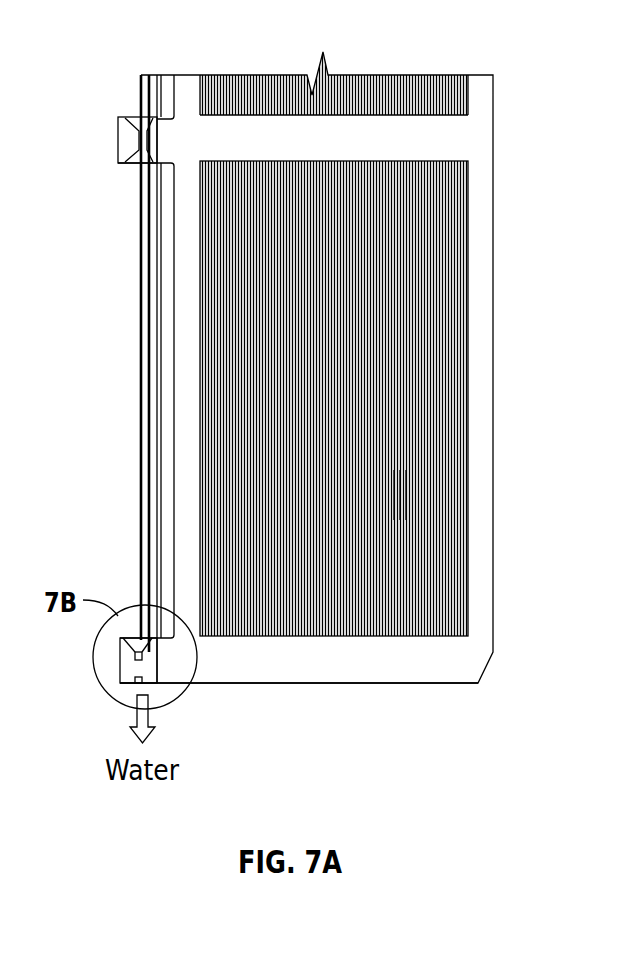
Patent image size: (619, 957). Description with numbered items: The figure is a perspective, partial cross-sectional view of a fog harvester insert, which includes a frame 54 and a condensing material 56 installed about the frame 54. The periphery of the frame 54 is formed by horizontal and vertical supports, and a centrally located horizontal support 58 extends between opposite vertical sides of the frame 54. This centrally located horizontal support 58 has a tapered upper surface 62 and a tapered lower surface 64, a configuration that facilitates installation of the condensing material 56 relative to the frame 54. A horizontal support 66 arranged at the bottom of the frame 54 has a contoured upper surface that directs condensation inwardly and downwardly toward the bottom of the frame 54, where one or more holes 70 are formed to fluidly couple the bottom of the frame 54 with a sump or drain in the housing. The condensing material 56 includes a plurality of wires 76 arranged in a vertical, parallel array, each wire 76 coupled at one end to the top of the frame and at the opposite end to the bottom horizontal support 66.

The frame 54 is at (500, 117).
The condensing material 56 is at (390, 274).
The centrally located horizontal support 58 is at (433, 138).
The tapered upper surface 62 is at (131, 117).
The lower surface 64 is at (132, 163).
The horizontal support 66 is at (313, 672).
The holes 70 is at (127, 688).
The wires 76 is at (397, 482).